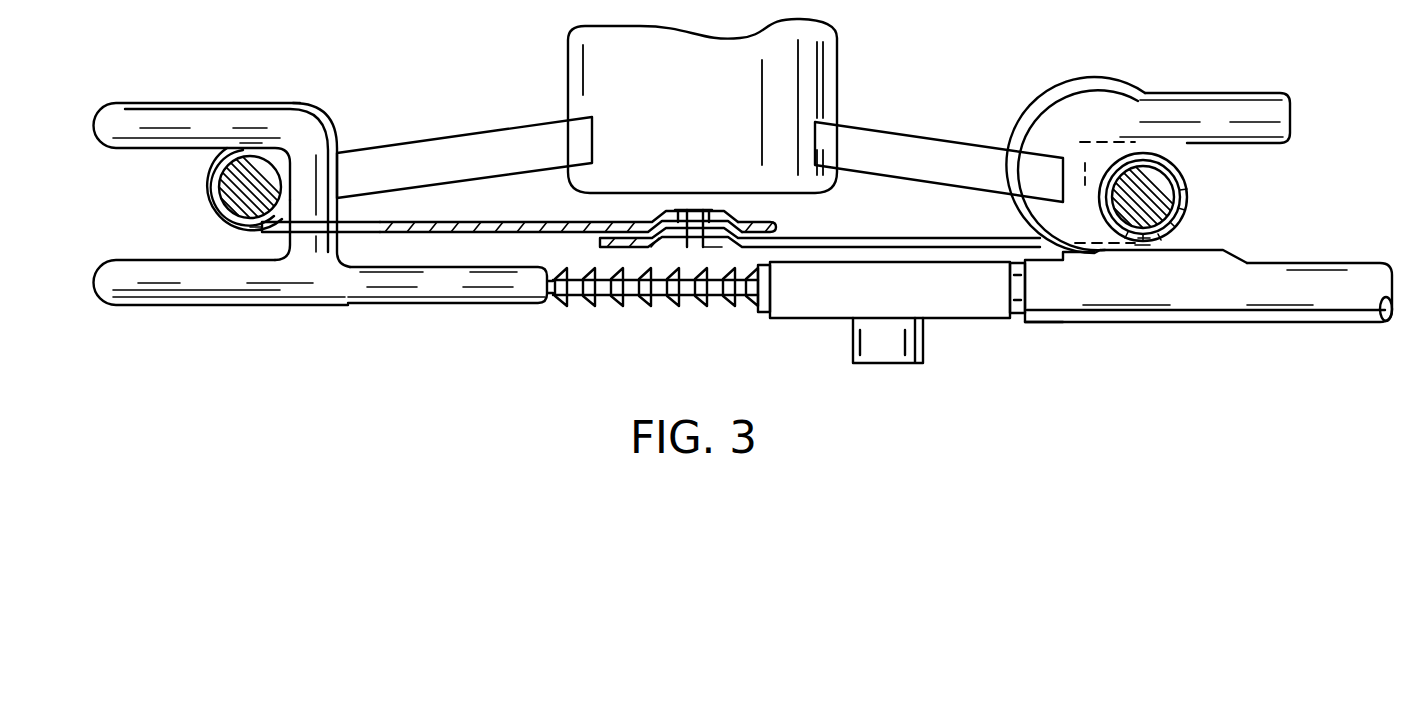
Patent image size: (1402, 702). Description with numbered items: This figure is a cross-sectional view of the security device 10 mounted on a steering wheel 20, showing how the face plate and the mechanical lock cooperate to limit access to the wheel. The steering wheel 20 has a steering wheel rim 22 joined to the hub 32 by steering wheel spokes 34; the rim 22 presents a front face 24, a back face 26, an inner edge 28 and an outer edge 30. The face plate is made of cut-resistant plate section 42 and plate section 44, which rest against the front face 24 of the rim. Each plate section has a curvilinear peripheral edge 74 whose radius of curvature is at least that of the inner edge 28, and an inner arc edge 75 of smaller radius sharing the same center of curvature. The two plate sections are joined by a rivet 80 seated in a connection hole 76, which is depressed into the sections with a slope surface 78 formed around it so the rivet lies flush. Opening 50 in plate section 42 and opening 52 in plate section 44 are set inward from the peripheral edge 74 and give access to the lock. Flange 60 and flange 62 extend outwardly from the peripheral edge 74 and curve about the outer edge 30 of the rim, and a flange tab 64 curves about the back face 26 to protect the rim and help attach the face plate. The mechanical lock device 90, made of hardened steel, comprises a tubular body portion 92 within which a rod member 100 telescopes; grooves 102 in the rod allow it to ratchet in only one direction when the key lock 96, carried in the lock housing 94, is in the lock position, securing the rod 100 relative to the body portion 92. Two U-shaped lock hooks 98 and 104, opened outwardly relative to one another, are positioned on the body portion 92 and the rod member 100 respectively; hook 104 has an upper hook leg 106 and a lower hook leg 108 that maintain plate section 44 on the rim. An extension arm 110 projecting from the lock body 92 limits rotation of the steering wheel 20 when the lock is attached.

The security device 10 is at (1213, 202).
The steering wheel 20 is at (908, 88).
The steering wheel rim 22 is at (226, 181).
The front face 24 is at (1143, 242).
The back face 26 is at (1143, 165).
The inner edge 28 is at (1105, 195).
The outer edge 30 is at (1178, 195).
The hub 32 is at (818, 82).
The steering wheel spokes 34 is at (460, 145).
The plate section 42 is at (985, 258).
The plate section 44 is at (432, 230).
The opening 50 is at (1042, 245).
The opening 52 is at (352, 222).
The flange 60 is at (1185, 212).
The flange 62 is at (208, 200).
The flange tab 64 is at (251, 140).
The peripheral edge 74 is at (257, 228).
The inner arc edge 75 is at (603, 238).
The connection hole 76 is at (705, 208).
The slope surface 78 is at (713, 250).
The rivet 80 is at (698, 222).
The mechanical lock device 90 is at (1256, 333).
The tubular body portion 92 is at (1178, 312).
The lock housing 94 is at (830, 305).
The key lock 96 is at (895, 366).
The lock hook 98 is at (1225, 105).
The rod member 100 is at (470, 292).
The grooves 102 is at (605, 300).
The lock hook 104 is at (299, 304).
The upper hook leg 106 is at (148, 285).
The lower hook leg 108 is at (158, 120).
The extension arm 110 is at (1352, 325).